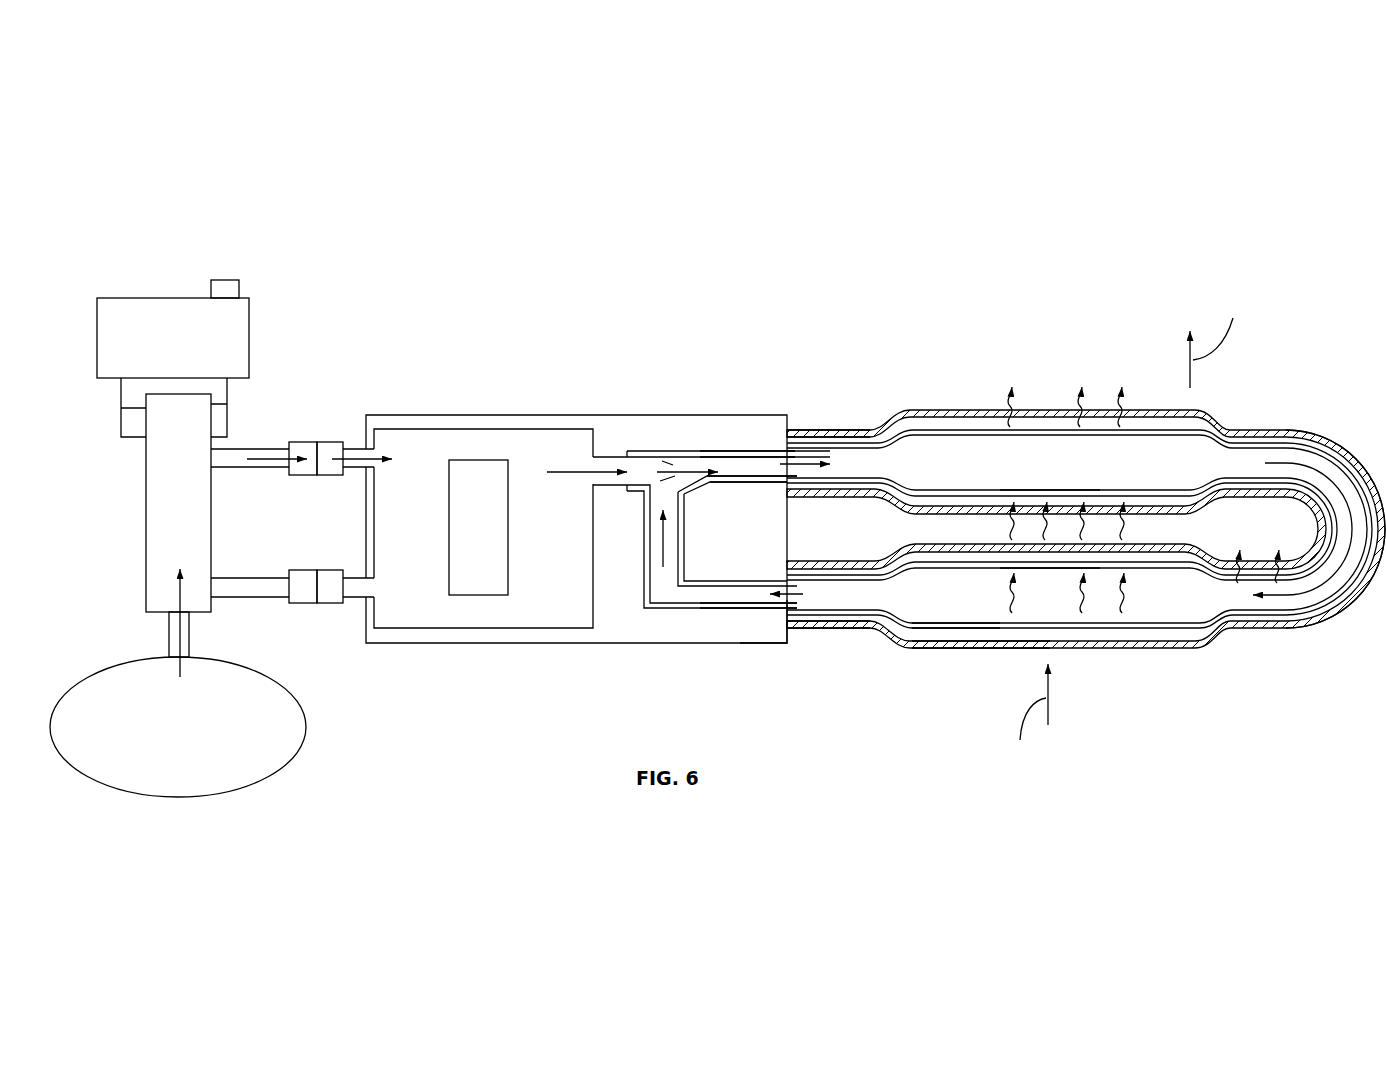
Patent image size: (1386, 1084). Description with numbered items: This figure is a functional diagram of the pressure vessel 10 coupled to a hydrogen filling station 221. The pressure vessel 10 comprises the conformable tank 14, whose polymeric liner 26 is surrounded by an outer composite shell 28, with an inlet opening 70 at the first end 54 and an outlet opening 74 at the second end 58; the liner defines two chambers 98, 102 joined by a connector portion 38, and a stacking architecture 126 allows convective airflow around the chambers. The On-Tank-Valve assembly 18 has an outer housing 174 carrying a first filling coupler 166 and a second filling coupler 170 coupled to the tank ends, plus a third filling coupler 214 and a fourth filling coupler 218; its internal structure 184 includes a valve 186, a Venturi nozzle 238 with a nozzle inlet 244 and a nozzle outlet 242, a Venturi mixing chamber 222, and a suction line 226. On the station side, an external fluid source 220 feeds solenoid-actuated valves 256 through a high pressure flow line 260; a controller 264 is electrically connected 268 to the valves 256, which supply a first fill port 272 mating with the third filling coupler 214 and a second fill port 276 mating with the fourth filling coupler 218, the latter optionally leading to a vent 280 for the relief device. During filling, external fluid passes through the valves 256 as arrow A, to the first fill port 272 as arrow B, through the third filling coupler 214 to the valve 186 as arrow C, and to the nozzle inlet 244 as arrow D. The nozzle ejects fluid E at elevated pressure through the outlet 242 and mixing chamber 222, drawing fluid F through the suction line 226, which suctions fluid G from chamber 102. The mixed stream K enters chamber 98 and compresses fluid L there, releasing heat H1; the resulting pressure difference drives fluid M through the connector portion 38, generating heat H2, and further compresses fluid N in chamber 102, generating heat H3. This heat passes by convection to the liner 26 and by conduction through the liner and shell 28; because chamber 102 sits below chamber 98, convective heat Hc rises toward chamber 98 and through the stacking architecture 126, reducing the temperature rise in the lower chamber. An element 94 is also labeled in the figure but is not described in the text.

The pressure vessel 10 is at (1086, 512).
The conformable tank 14 is at (1045, 406).
The On-Tank-Valve assembly 18 is at (486, 646).
The polymeric liner 26 is at (938, 626).
The outer composite shell 28 is at (984, 633).
The connector portion 38 is at (1345, 454).
The first terminal end 54 is at (800, 428).
The second terminal end 58 is at (836, 629).
The inlet opening 70 is at (812, 457).
The outlet opening 74 is at (812, 629).
The insert sleeve 94 is at (1079, 517).
The chamber 98 is at (924, 455).
The chamber 102 is at (1170, 596).
The stacking architecture 126 is at (1233, 372).
The first filling coupler 166 is at (740, 448).
The second filling coupler 170 is at (750, 597).
The outer housing 174 is at (767, 646).
The internal structure 184 is at (440, 427).
The valve 186 is at (496, 537).
The third filling coupler 214 is at (330, 441).
The fourth filling coupler 218 is at (330, 604).
The external fluid source 220 is at (87, 673).
The hydrogen filling station 221 is at (82, 268).
The Venturi mixing chamber 222 is at (748, 470).
The suction line 226 is at (657, 585).
The Venturi nozzle 238 is at (643, 450).
The nozzle outlet 242 is at (680, 462).
The nozzle inlet 244 is at (608, 455).
The solenoid-actuated valves 256 is at (130, 503).
The high pressure flow line 260 is at (169, 638).
The controller 264 is at (95, 330).
The electrical connection 268 is at (227, 404).
The first fill port 272 is at (303, 441).
The second fill port 276 is at (303, 604).
The vent 280 is at (226, 278).
The arrow A is at (190, 625).
The arrow B is at (262, 462).
The arrow C is at (373, 462).
The arrow D is at (568, 470).
The fluid E is at (693, 470).
The fluid F is at (660, 540).
The fluid G is at (817, 592).
The fluid K is at (777, 437).
The fluid L is at (1056, 476).
The fluid M is at (1324, 590).
The fluid N is at (1056, 607).
The heat H1 is at (1008, 402).
The heat H2 is at (1238, 584).
The heat H3 is at (1124, 614).
The convective heat Hc is at (1153, 317).